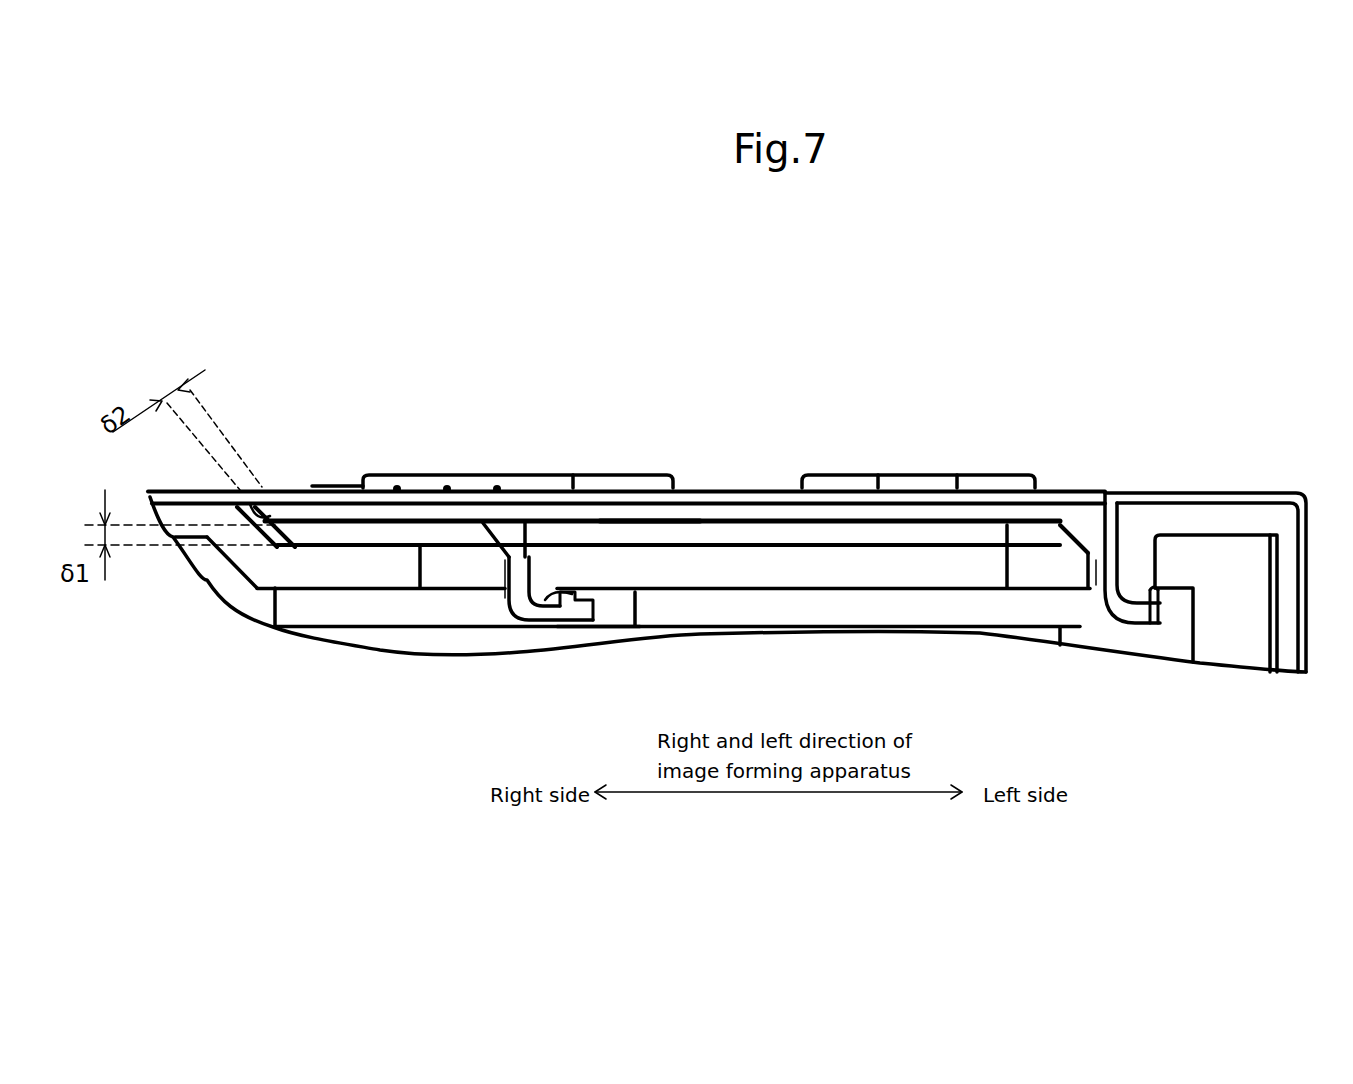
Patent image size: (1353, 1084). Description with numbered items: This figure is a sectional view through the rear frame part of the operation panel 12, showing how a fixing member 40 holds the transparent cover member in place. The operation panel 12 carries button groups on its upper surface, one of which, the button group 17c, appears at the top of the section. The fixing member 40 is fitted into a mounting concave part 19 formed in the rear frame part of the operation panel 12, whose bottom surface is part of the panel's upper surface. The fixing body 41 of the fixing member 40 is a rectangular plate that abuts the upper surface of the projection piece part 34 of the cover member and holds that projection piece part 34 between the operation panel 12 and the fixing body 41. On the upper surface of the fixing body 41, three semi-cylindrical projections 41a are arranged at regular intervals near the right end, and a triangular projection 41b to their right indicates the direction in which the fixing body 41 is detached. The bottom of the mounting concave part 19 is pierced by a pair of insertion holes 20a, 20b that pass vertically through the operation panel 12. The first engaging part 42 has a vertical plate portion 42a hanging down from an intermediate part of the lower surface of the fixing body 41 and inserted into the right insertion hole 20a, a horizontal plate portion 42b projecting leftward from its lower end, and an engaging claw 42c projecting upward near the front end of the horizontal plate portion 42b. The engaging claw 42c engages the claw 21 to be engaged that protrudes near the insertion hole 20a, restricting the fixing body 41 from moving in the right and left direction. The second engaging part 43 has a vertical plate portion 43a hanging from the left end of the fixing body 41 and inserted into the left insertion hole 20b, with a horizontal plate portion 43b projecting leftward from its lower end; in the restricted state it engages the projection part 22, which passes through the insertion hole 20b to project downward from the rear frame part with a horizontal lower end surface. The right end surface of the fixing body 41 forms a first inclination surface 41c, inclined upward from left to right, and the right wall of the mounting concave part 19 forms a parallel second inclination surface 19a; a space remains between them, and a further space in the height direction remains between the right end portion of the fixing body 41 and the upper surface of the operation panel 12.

The operation panel 12 is at (316, 568).
The button group 17c is at (913, 472).
The mounting concave part 19 is at (338, 545).
The second inclination surface 19a is at (240, 497).
The right insertion hole 20a is at (430, 566).
The left insertion hole 20b is at (1020, 562).
The claw to be engaged 21 is at (540, 620).
The projection part 22 is at (1145, 568).
The projection piece part 34 is at (718, 530).
The fixing member 40 is at (690, 477).
The fixing body 41 is at (1052, 490).
The projection 41a is at (350, 487).
The projection 41b is at (497, 486).
The first inclination surface 41c is at (250, 507).
The first engaging part 42 is at (500, 613).
The vertical plate portion 42a is at (505, 602).
The horizontal plate portion 42b is at (567, 613).
The engaging claw 42c is at (585, 598).
The second engaging part 43 is at (1080, 607).
The vertical plate portion 43a is at (1086, 578).
The horizontal plate portion 43b is at (1128, 613).